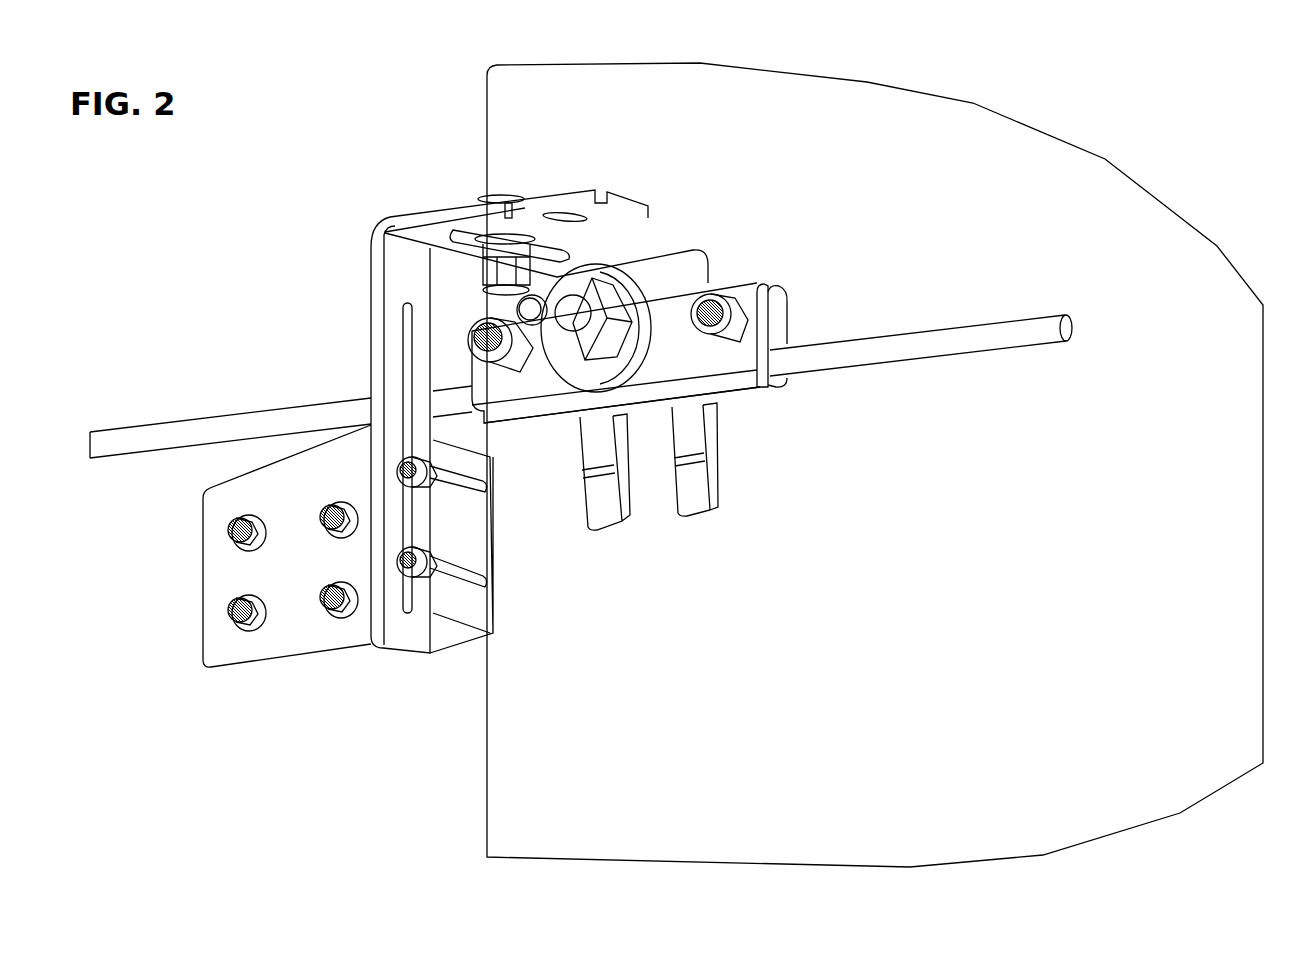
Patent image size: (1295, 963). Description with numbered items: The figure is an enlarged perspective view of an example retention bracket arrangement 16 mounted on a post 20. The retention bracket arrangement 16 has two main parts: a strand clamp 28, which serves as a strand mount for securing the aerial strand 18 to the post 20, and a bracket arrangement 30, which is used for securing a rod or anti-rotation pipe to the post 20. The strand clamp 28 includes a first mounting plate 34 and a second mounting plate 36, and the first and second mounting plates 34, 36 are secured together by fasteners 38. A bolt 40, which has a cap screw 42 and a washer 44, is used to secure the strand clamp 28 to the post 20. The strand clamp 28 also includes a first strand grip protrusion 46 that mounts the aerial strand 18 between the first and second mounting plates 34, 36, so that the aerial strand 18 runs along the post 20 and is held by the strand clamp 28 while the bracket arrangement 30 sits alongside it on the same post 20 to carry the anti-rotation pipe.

The retention bracket arrangement 16 is at (848, 140).
The aerial strand 18 is at (130, 435).
The post 20 is at (1032, 677).
The strand clamp 28 is at (767, 420).
The bracket arrangement 30 is at (393, 192).
The first mounting plate 34 is at (788, 306).
The second mounting plate 36 is at (518, 393).
The fasteners 38 is at (482, 322).
The bolt 40 is at (574, 318).
The cap screw 42 is at (604, 355).
The washer 44 is at (637, 300).
The first strand grip protrusion 46 is at (783, 388).